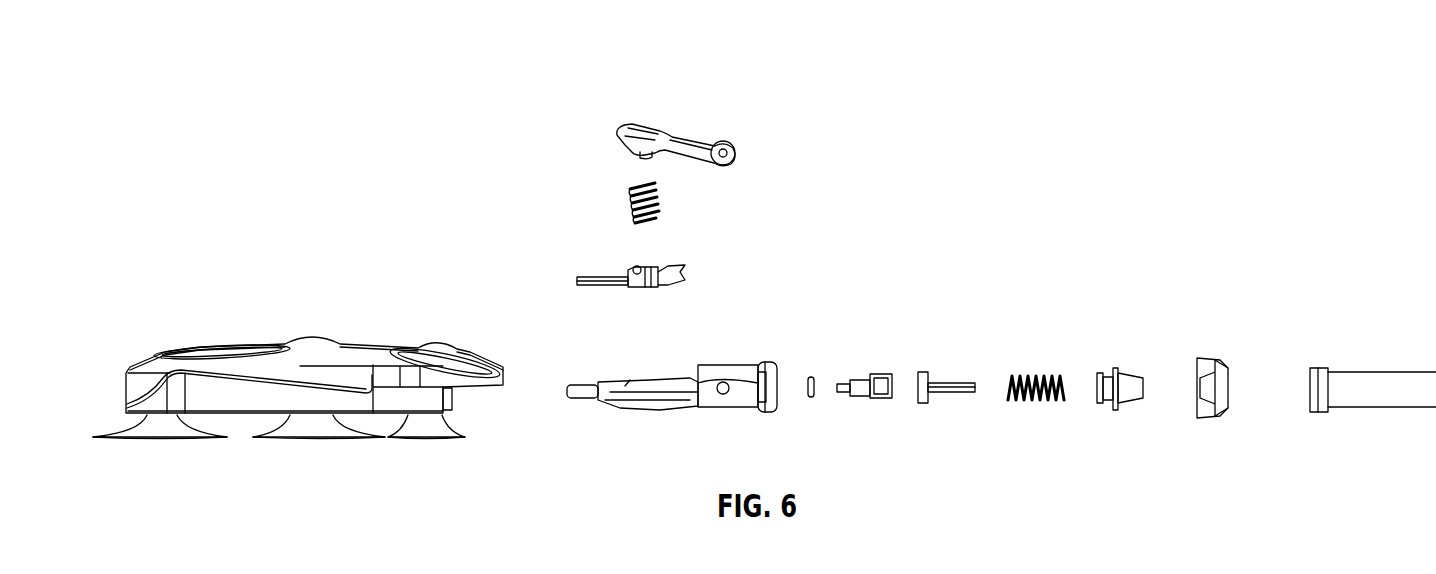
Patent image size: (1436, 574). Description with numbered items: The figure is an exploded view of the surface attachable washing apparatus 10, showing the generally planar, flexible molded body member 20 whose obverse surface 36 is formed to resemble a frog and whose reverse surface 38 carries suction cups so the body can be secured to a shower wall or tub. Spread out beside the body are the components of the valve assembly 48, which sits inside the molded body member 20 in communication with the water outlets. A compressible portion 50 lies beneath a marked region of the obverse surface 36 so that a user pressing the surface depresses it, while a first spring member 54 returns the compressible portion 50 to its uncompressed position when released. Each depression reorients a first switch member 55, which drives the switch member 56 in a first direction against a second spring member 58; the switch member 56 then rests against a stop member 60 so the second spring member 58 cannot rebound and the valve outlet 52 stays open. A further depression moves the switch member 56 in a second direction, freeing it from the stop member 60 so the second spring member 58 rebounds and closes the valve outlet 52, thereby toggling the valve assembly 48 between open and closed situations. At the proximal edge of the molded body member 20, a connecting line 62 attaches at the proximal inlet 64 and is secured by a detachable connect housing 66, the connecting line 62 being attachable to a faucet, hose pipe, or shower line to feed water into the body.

The surface attachable washing apparatus 10 is at (199, 142).
The molded body member 20 is at (129, 323).
The obverse surface 36 is at (362, 350).
The reverse surface 38 is at (252, 418).
The proximal inlet 64 is at (466, 401).
The valve assembly 48 is at (1228, 85).
The compressible portion 50 is at (650, 125).
The first spring member 54 is at (630, 195).
The first switch member 55 is at (602, 278).
The valve outlet 52 is at (657, 365).
The stop member 60 is at (778, 388).
The switch member 56 is at (937, 383).
The second spring member 58 is at (1038, 375).
The connect housing 66 is at (1208, 358).
The connecting line 62 is at (1398, 370).